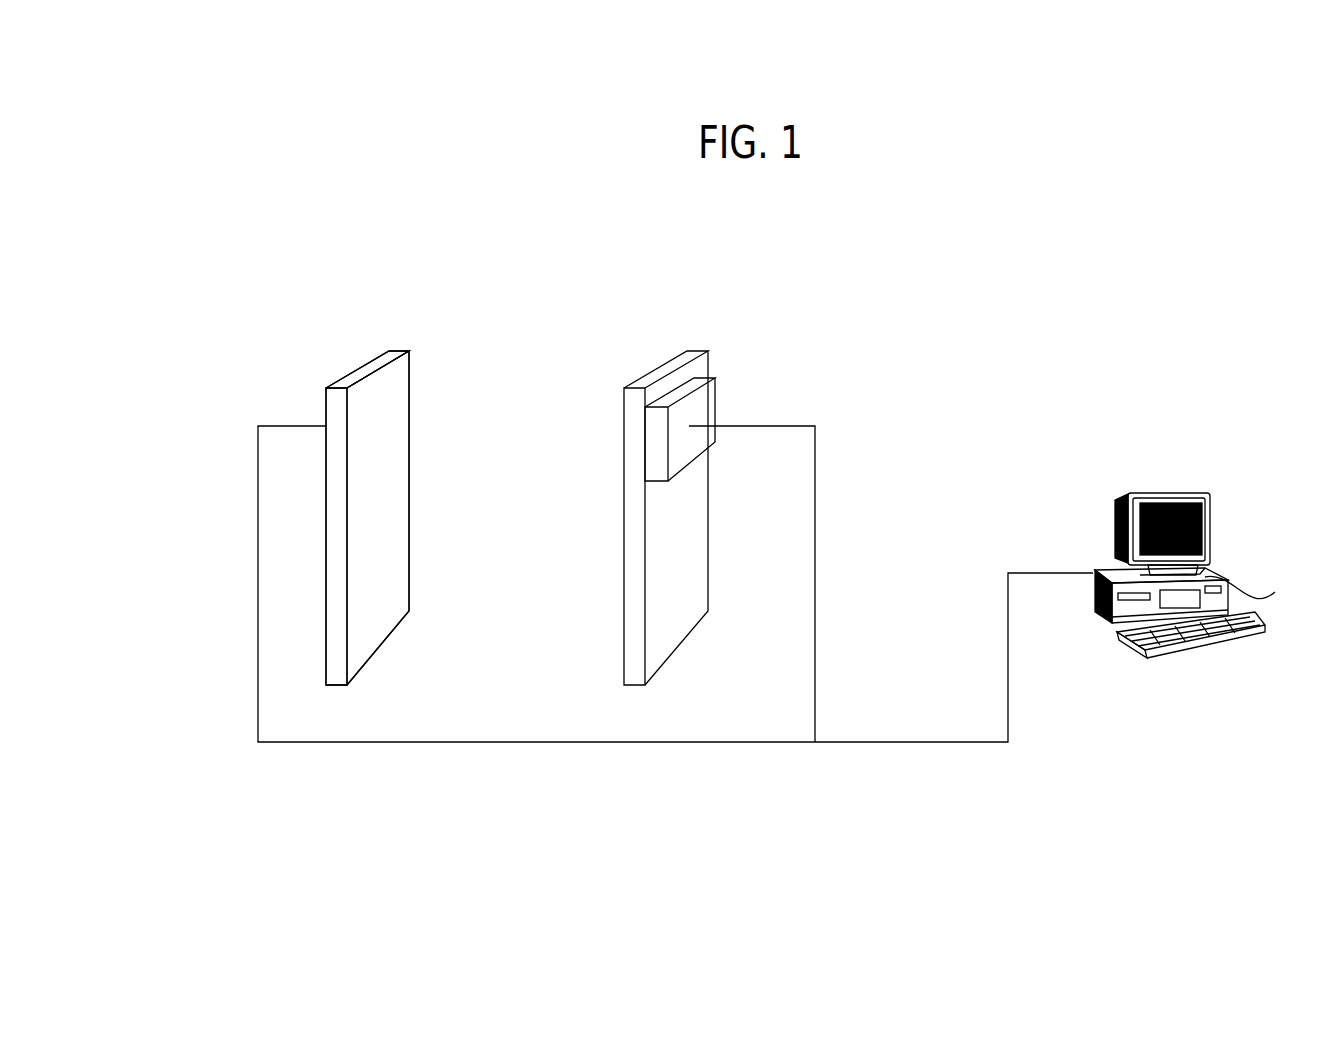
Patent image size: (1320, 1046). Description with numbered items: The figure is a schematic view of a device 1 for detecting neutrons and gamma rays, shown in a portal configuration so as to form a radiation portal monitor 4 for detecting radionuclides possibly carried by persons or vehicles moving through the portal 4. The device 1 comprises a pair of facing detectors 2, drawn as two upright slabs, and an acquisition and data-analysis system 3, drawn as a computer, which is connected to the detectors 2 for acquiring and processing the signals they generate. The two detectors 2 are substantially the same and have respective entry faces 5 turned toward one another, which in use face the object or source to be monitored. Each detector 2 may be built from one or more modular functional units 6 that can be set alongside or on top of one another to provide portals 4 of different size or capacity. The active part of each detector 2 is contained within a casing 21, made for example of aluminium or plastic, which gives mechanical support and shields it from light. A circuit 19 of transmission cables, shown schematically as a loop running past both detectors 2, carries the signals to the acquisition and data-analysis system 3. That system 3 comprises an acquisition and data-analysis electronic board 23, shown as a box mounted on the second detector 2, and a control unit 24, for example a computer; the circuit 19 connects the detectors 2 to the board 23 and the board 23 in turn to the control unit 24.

The device for detecting neutrons and gamma rays 1 is at (158, 312).
The detector 2 is at (338, 467).
The acquisition and data-analysis system 3 is at (1070, 458).
The radiation portal monitor 4 is at (588, 295).
The entry face 5 is at (383, 428).
The modular functional unit 6 is at (400, 388).
The circuit 19 is at (733, 742).
The casing 21 is at (353, 378).
The acquisition and data-analysis electronic board 23 is at (700, 407).
The control unit 24 is at (1255, 581).